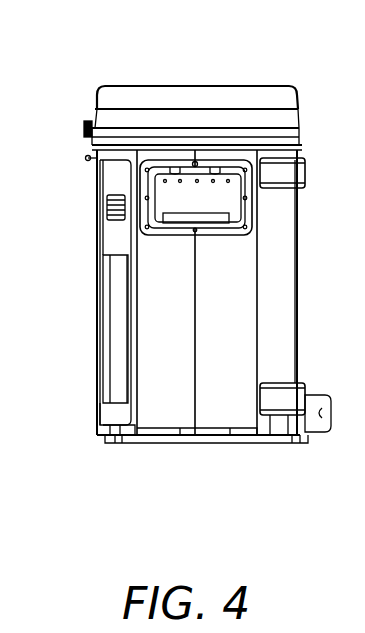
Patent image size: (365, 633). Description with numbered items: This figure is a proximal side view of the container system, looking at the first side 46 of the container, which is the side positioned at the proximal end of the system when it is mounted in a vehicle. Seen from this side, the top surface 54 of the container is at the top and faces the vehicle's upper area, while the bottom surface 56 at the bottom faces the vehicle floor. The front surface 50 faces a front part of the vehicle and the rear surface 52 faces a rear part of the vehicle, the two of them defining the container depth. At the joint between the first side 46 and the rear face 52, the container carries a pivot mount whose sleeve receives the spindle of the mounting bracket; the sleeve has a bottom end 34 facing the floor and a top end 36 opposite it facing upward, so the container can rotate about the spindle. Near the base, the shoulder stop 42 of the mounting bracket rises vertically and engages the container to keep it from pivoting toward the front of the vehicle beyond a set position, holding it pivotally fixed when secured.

The top surface 54 is at (192, 86).
The rear surface 52 is at (92, 181).
The top end 36 is at (92, 222).
The front surface 50 is at (300, 198).
The first side 46 is at (240, 345).
The bottom end 34 is at (118, 443).
The bottom surface 56 is at (153, 443).
The shoulder stop 42 is at (305, 432).